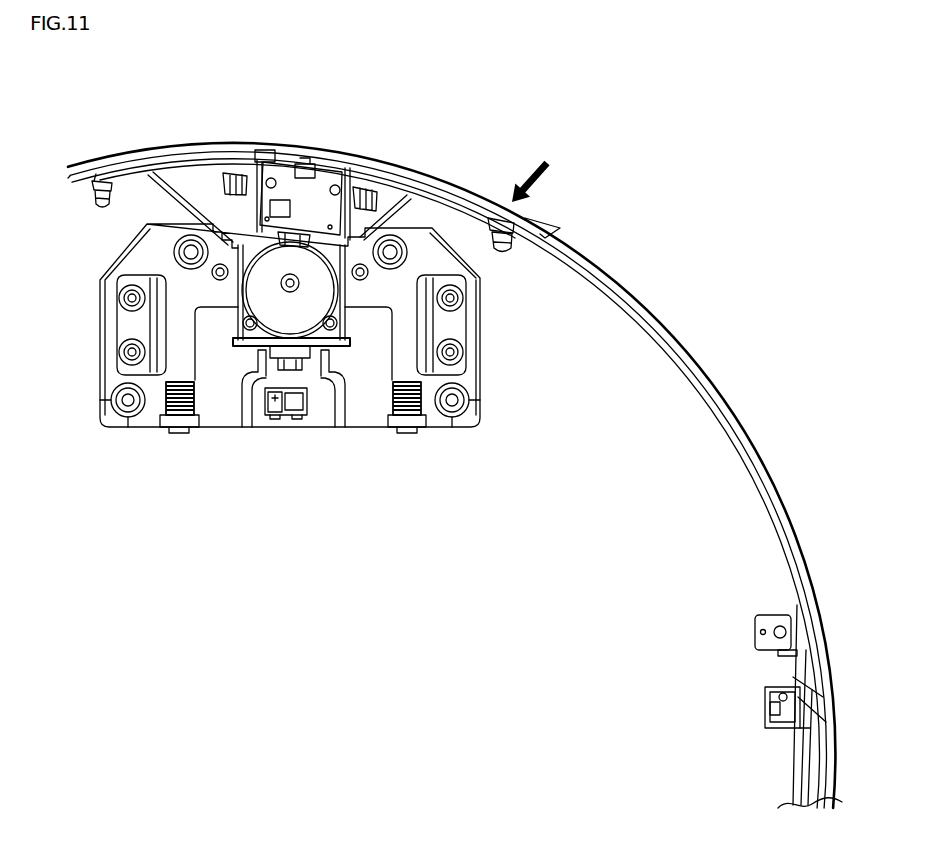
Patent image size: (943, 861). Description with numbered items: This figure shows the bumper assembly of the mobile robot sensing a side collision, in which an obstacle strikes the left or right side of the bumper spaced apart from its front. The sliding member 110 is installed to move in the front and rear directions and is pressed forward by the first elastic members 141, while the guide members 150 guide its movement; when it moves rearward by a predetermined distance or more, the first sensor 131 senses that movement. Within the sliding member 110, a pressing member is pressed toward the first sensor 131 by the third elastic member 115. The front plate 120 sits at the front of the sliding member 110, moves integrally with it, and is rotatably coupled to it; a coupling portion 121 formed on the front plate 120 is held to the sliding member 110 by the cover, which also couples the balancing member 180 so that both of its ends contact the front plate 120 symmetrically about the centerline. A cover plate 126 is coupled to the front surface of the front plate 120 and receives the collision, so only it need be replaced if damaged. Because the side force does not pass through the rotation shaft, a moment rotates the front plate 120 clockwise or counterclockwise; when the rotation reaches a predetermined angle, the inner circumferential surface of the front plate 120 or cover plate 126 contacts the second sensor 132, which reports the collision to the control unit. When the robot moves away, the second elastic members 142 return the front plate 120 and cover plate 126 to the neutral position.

The sliding member 110 is at (218, 292).
The third elastic member 115 is at (286, 372).
The front plate 120 is at (350, 168).
The coupling portion 121 is at (272, 242).
The cover plate 126 is at (265, 145).
The first sensor 131 is at (308, 405).
The second sensor 132 is at (805, 730).
The first elastic member 141 is at (166, 395).
The second elastic member 142 is at (793, 677).
The guide member 150 is at (138, 323).
The balancing member 180 is at (405, 193).